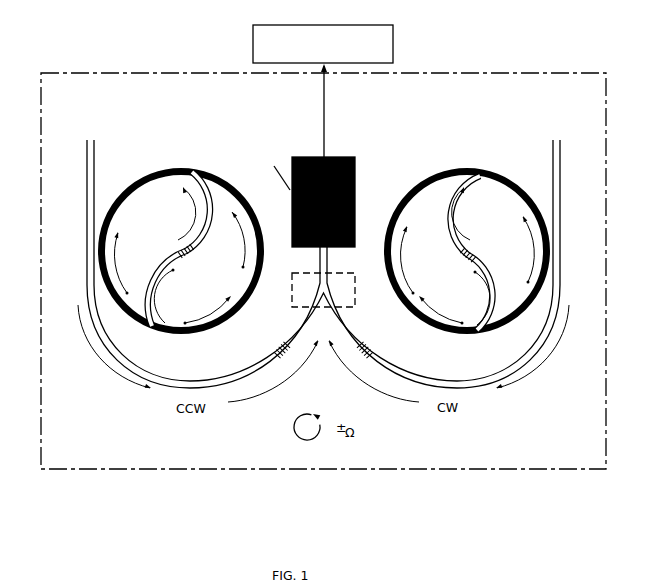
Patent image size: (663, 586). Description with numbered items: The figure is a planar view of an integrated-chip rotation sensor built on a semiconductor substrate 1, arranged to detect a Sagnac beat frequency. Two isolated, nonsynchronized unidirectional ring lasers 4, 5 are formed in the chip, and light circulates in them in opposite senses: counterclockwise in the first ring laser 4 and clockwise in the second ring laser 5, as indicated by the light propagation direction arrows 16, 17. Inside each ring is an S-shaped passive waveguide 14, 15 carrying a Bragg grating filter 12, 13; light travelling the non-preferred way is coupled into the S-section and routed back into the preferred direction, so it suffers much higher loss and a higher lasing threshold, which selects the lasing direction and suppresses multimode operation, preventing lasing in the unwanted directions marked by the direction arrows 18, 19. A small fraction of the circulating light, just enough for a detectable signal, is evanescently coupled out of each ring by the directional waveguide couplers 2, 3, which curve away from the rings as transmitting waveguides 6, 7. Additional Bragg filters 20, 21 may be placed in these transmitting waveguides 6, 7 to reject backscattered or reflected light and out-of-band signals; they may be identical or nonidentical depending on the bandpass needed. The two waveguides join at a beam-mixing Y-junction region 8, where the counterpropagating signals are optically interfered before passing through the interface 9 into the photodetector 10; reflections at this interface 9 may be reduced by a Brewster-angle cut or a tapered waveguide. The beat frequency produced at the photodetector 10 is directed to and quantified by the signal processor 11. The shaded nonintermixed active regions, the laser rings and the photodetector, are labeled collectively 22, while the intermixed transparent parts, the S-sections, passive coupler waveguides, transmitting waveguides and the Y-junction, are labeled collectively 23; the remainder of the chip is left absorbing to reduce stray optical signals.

The semiconductor substrate 1 is at (323, 261).
The directional waveguide coupler 2 is at (168, 264).
The directional waveguide coupler 3 is at (476, 264).
The unidirectional ring laser 4 is at (150, 170).
The unidirectional ring laser 5 is at (488, 190).
The transmitting waveguide 6 is at (129, 409).
The transmitting waveguide 7 is at (515, 409).
The Y-junction region 8 is at (355, 214).
The interface 9 is at (323, 260).
The photodetector 10 is at (295, 187).
The signal processor 11 is at (359, 90).
The Bragg grating filter 12 is at (162, 230).
The Bragg grating filter 13 is at (490, 233).
The S-shaped passive waveguide 14 is at (180, 249).
The S-shaped passive waveguide 15 is at (468, 253).
The light propagation direction arrow 16 is at (204, 306).
The light propagation direction arrow 17 is at (525, 239).
The direction arrow 18 is at (205, 310).
The direction arrow 19 is at (441, 310).
The Bragg filter 20 is at (261, 346).
The Bragg filter 21 is at (391, 346).
The nonintermixed regions 22 is at (327, 172).
The intermixed transparent regions 23 is at (322, 284).